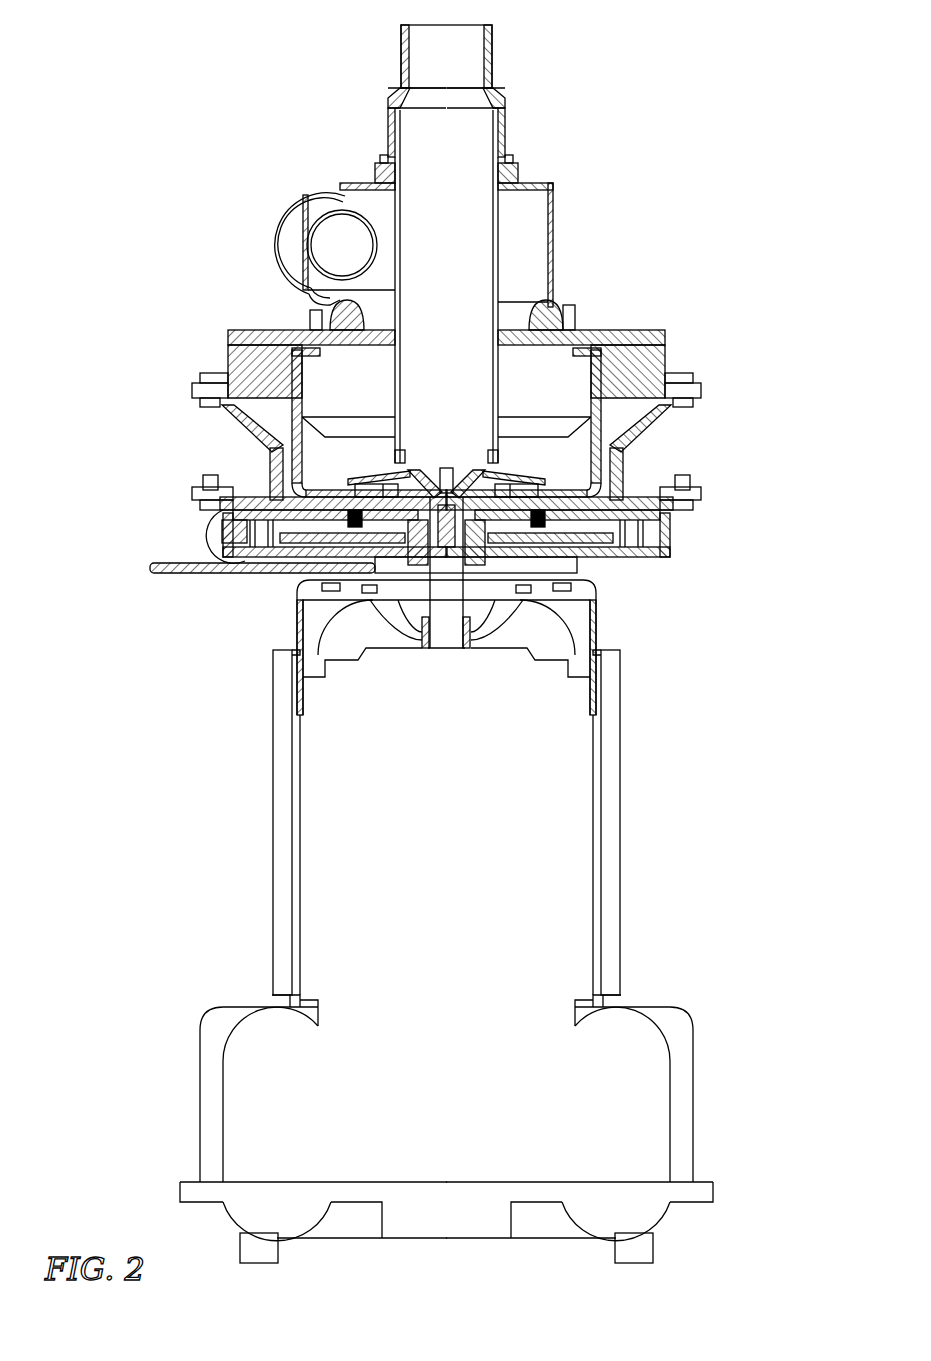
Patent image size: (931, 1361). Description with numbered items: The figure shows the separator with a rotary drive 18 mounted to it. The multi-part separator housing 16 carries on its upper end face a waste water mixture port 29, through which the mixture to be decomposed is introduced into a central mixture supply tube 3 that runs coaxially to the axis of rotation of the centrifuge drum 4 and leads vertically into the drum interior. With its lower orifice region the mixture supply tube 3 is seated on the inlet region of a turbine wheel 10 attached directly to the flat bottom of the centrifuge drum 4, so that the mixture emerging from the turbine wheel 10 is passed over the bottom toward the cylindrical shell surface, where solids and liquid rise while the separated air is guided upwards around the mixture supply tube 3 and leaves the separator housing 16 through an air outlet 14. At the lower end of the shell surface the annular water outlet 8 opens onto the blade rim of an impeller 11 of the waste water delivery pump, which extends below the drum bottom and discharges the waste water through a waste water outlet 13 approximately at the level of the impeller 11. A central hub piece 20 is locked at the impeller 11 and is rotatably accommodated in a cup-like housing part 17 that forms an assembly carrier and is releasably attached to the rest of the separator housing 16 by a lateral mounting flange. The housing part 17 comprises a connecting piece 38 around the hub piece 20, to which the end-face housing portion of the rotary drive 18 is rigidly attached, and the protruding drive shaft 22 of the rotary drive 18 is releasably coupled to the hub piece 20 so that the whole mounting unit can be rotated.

The waste water mixture port 29 is at (492, 46).
The mixture supply tube 3 is at (498, 262).
The air outlet 14 is at (330, 244).
The separator housing 16 is at (641, 332).
The water outlet 8 is at (278, 397).
The centrifuge drum 4 is at (293, 443).
The turbine wheel 10 is at (523, 473).
The waste water outlet 13 is at (230, 530).
The impeller 11 is at (634, 557).
The hub piece 20 is at (395, 566).
The housing part 17 is at (609, 560).
The drive shaft 22 is at (445, 610).
The connecting piece 38 is at (528, 593).
The rotary drive 18 is at (570, 815).